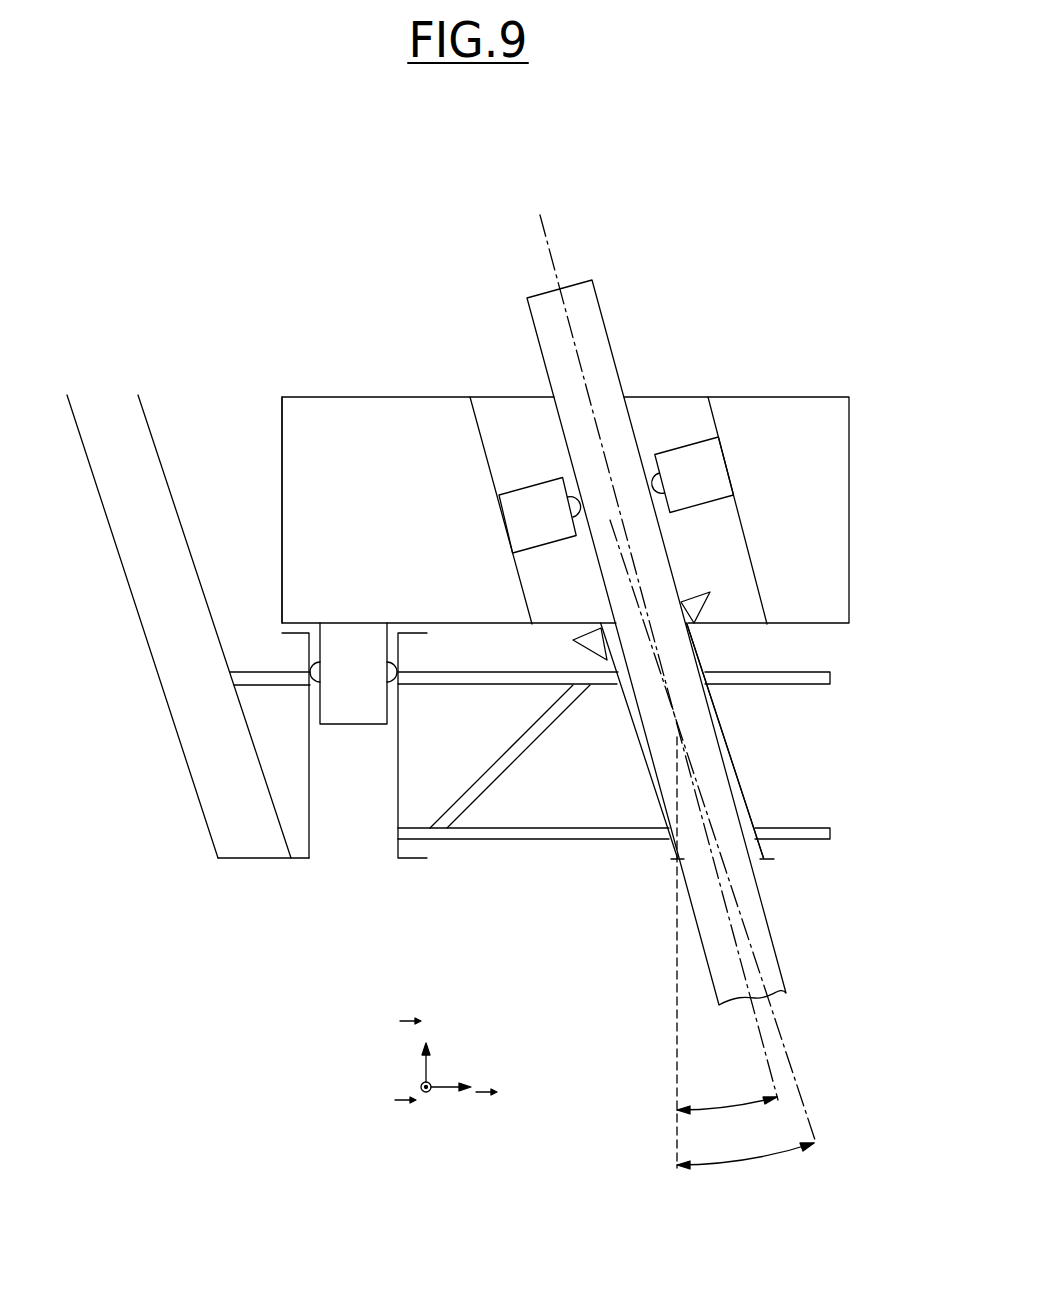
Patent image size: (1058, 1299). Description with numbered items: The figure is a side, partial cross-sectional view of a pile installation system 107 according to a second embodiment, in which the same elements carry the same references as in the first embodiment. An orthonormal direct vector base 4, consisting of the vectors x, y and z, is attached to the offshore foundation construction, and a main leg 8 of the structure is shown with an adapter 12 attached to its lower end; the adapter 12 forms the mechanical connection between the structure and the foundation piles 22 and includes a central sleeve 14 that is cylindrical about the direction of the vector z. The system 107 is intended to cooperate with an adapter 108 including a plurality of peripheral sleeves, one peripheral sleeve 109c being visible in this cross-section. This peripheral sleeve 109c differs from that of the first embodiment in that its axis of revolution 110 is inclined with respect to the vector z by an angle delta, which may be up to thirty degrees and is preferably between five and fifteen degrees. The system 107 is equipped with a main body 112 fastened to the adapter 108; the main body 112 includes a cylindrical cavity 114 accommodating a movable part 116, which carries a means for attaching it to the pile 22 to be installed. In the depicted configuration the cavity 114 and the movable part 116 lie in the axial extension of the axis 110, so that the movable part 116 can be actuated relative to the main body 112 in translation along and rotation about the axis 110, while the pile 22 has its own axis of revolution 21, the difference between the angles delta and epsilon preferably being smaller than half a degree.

The orthonormal direct vector base 4 is at (372, 1128).
The main leg 8 is at (110, 398).
The adapter 12 is at (870, 813).
The central sleeve 14 is at (283, 650).
The axis of revolution 21 is at (546, 240).
The foundation pile 22 is at (608, 338).
The pile installation system 107 is at (313, 370).
The adapter 108 is at (770, 790).
The peripheral sleeve 109c is at (729, 747).
The axis of revolution 110 is at (816, 1112).
The main body 112 is at (282, 450).
The cylindrical cavity 114 is at (482, 430).
The movable part 116 is at (543, 513).